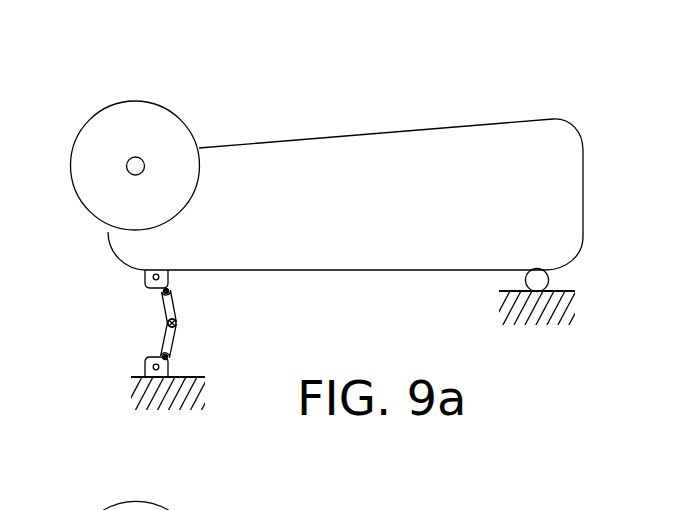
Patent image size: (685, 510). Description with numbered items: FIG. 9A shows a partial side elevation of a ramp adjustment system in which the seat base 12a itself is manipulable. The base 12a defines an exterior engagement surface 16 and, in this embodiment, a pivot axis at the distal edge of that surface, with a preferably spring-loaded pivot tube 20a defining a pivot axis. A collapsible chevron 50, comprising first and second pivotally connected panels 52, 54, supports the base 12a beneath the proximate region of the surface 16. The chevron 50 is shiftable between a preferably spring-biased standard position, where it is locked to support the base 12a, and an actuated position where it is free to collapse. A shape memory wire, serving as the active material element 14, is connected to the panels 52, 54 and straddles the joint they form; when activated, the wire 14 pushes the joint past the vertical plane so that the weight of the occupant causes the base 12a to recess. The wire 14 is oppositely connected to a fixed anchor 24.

The seat base 12a is at (397, 213).
The exterior engagement surface 16 is at (372, 132).
The pivot tube 20a is at (547, 273).
The fixed anchor 24 is at (567, 323).
The collapsible chevron 50 is at (248, 294).
The first panel 52 is at (160, 303).
The second panel 54 is at (162, 336).
The active material element 14 is at (175, 338).